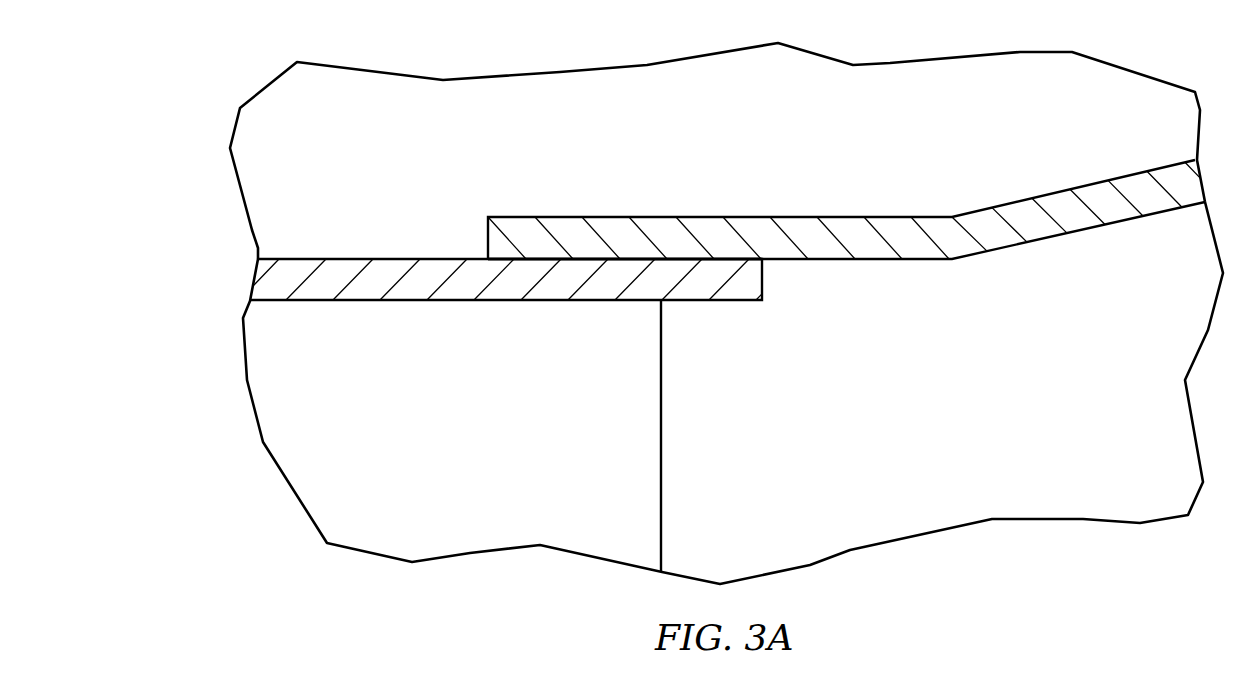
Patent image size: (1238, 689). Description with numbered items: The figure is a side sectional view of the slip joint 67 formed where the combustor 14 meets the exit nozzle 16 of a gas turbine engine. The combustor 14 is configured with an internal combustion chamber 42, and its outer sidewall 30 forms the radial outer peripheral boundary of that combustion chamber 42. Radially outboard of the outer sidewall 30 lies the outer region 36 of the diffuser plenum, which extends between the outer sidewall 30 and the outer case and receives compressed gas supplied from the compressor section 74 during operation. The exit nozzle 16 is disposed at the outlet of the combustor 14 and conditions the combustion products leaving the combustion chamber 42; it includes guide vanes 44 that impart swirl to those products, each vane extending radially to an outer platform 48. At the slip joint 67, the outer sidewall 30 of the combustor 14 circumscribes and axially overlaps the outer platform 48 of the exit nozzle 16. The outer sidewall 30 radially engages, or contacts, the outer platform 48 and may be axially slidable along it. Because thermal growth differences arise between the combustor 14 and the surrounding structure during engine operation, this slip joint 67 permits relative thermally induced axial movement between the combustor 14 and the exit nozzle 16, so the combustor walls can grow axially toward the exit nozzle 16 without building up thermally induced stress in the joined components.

The combustor 14 is at (973, 192).
The exit nozzle 16 is at (243, 438).
The outer sidewall 30 is at (1068, 190).
The outer region 36 is at (545, 163).
The combustion chamber 42 is at (884, 405).
The guide vanes 44 is at (662, 428).
The outer platform 48 is at (362, 258).
The slip joint 67 is at (620, 258).
The compressor section 74 is at (257, 142).